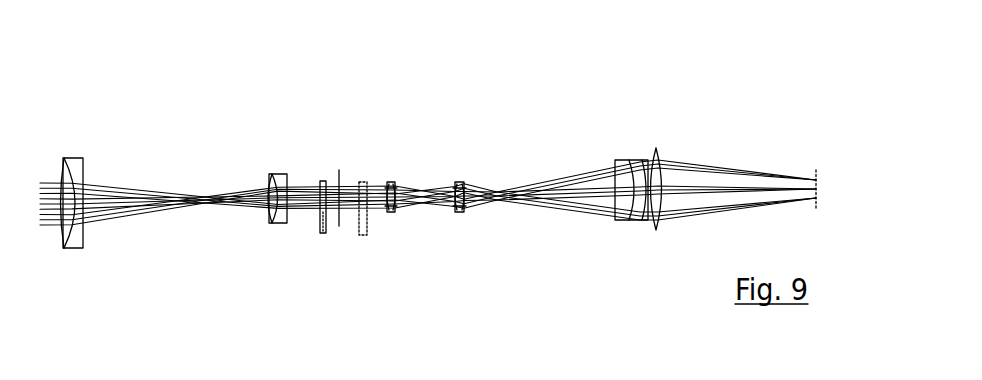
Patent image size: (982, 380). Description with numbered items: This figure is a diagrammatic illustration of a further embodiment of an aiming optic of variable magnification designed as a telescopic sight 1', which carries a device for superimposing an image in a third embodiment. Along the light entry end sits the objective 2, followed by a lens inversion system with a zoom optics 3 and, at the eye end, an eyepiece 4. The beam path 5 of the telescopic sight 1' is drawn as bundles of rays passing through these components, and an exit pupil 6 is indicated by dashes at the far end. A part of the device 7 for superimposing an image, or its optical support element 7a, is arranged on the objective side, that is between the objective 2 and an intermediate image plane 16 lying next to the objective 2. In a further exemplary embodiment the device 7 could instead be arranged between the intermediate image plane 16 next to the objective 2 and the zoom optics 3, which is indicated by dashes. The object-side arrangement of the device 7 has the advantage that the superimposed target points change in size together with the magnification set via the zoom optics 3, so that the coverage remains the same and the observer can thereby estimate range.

The telescopic sight 1' is at (755, 45).
The objective 2 is at (146, 178).
The zoom optics 3 is at (420, 179).
The eyepiece 4 is at (632, 148).
The beam path 5 is at (181, 190).
The exit pupil 6 is at (816, 168).
The device for superimposing an image 7 is at (320, 240).
The optical support element 7a is at (362, 236).
The intermediate image plane 16 is at (340, 163).